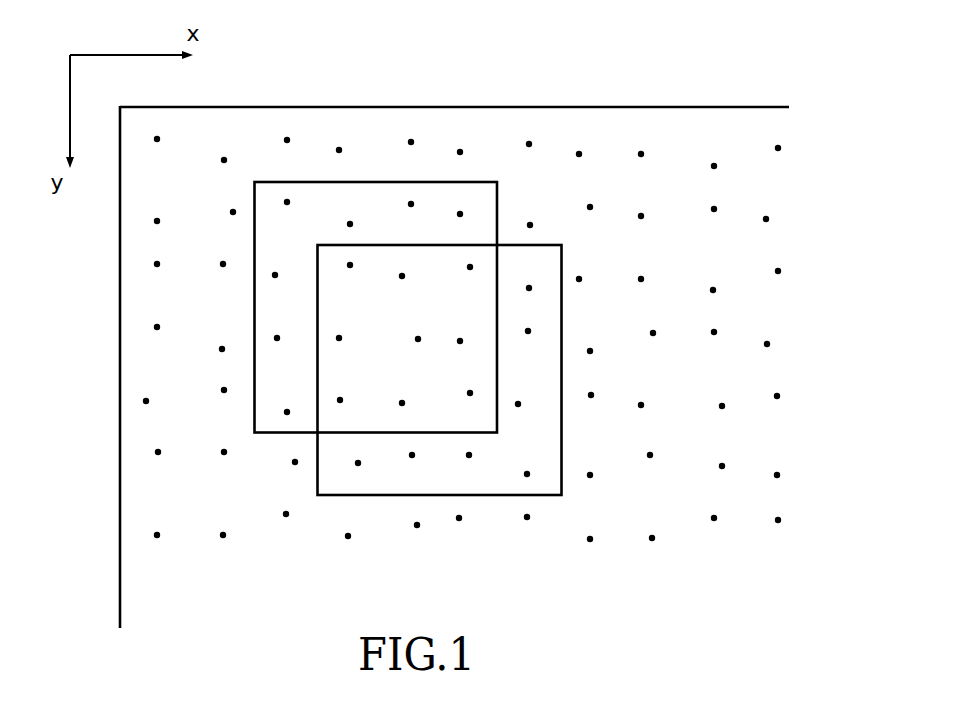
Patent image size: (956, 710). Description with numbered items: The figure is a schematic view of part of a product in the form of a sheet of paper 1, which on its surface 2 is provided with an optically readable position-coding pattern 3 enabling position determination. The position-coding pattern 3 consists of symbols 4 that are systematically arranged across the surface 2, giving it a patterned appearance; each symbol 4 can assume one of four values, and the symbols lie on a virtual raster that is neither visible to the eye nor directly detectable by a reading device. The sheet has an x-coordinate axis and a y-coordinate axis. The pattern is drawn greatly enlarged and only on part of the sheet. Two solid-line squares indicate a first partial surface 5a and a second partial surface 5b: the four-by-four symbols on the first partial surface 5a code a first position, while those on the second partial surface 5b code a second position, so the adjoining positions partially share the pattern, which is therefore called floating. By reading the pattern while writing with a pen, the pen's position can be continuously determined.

The sheet of paper 1 is at (641, 86).
The surface 2 is at (210, 619).
The position-coding pattern 3 is at (747, 322).
The symbols 4 is at (590, 539).
The first partial surface 5a is at (375, 182).
The second partial surface 5b is at (513, 245).